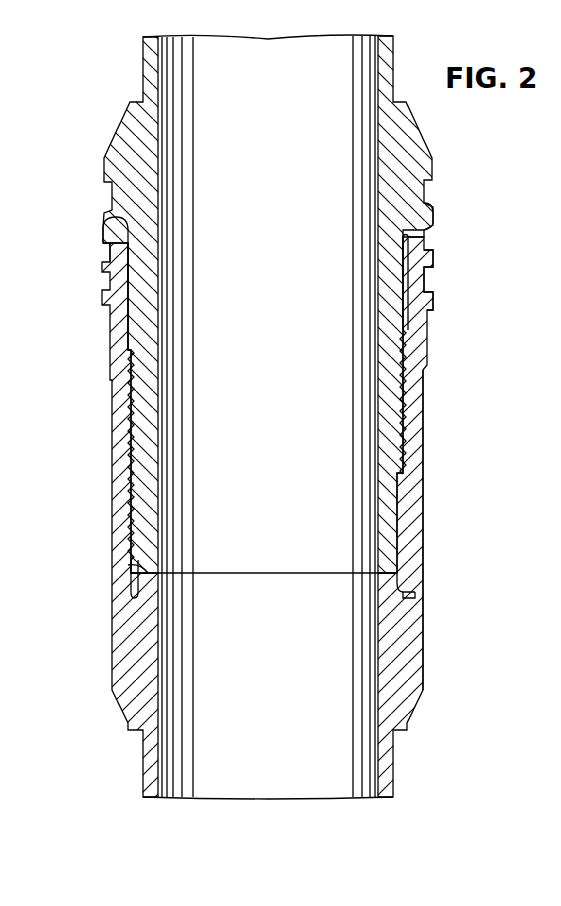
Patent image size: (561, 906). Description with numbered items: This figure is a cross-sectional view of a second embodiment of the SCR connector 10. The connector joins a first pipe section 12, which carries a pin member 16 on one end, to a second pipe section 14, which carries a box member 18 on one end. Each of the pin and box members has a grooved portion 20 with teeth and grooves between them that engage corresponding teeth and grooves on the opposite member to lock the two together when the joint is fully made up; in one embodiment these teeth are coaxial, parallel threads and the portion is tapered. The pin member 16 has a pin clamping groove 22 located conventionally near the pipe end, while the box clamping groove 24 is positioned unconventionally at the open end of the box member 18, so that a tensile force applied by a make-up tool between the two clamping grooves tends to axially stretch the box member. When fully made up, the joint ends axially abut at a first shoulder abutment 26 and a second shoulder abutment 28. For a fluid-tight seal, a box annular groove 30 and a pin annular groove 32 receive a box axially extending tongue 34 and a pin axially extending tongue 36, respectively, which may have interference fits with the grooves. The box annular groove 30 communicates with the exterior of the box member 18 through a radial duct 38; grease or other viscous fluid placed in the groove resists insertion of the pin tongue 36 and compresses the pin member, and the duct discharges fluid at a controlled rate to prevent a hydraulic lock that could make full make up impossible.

The SCR connector 10 is at (98, 68).
The first pipe section 12 is at (148, 86).
The second pipe section 14 is at (142, 760).
The pin member 16 is at (392, 328).
The box member 18 is at (423, 396).
The grooved portion 20 is at (405, 431).
The pin clamping groove 22 is at (432, 208).
The box clamping groove 24 is at (428, 285).
The first shoulder abutment 26 is at (425, 237).
The second shoulder abutment 28 is at (133, 566).
The box annular groove 30 is at (122, 610).
The pin annular groove 32 is at (105, 220).
The box axially extending tongue 34 is at (113, 243).
The pin axially extending tongue 36 is at (397, 586).
The radial duct 38 is at (417, 597).